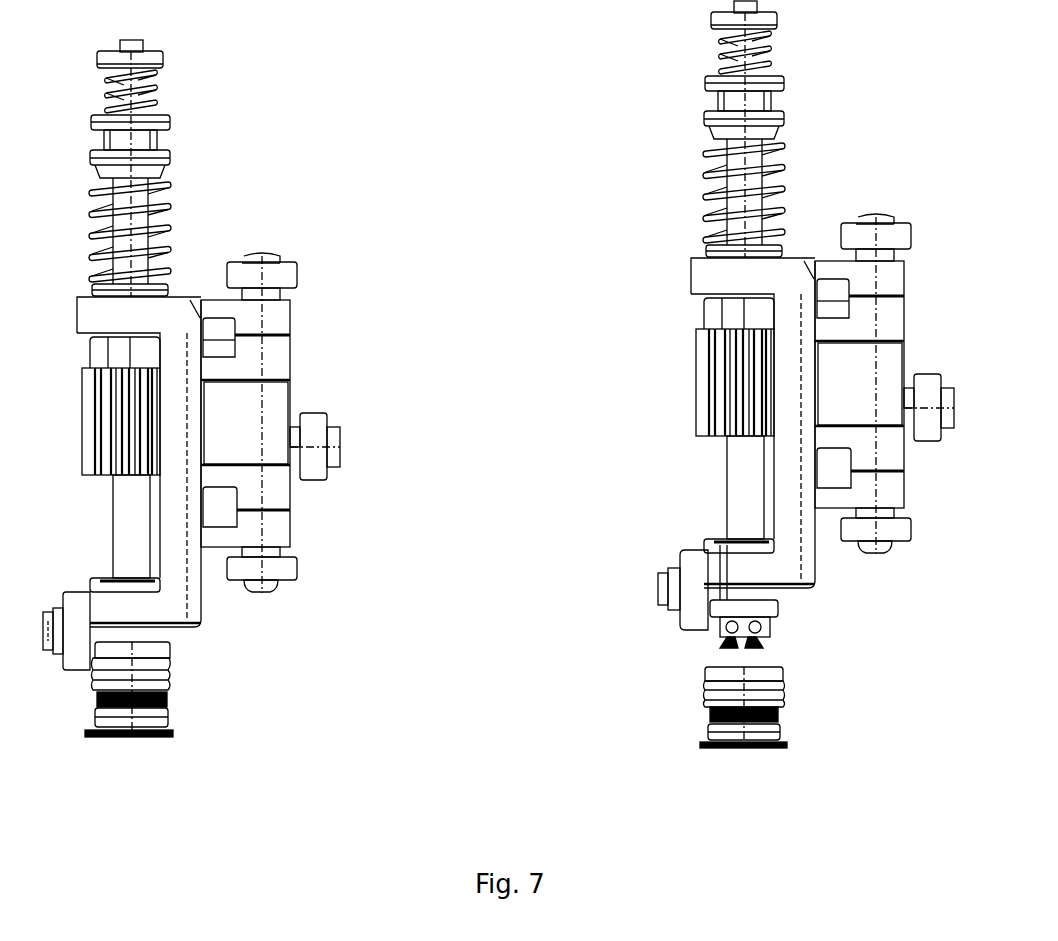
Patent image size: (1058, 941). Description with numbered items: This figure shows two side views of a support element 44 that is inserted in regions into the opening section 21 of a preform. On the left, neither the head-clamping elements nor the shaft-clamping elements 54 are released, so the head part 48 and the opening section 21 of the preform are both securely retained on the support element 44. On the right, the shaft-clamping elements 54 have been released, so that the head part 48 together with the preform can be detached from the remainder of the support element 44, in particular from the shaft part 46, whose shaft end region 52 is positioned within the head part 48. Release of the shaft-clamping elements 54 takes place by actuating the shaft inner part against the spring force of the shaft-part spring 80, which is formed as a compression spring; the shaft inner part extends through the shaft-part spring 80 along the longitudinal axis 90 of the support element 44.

The opening section 21 is at (176, 736).
The support element 44 is at (623, 285).
The shaft part 46 is at (152, 498).
The head part 48 is at (663, 713).
The shaft end region 52 is at (698, 634).
The shaft-clamping elements 54 is at (770, 626).
The shaft-part spring 80 is at (155, 82).
The longitudinal axis 90 is at (132, 140).